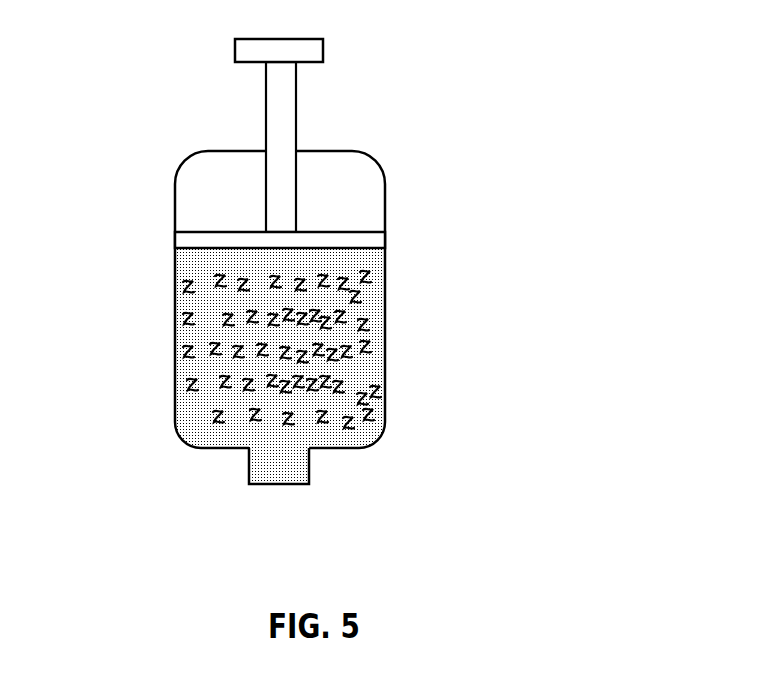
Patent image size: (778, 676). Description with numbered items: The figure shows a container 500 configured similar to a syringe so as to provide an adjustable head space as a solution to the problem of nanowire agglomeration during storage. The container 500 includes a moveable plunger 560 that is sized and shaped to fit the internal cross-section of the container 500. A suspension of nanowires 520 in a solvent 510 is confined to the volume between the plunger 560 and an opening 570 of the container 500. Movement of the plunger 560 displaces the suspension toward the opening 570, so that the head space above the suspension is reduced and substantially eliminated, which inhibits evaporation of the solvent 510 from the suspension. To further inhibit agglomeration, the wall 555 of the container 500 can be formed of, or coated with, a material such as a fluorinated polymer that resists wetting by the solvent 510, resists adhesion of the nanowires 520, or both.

The container 500 is at (175, 305).
The solvent 510 is at (197, 433).
The nanowires 520 is at (337, 383).
The wall 555 is at (385, 318).
The moveable plunger 560 is at (385, 240).
The opening 570 is at (309, 477).